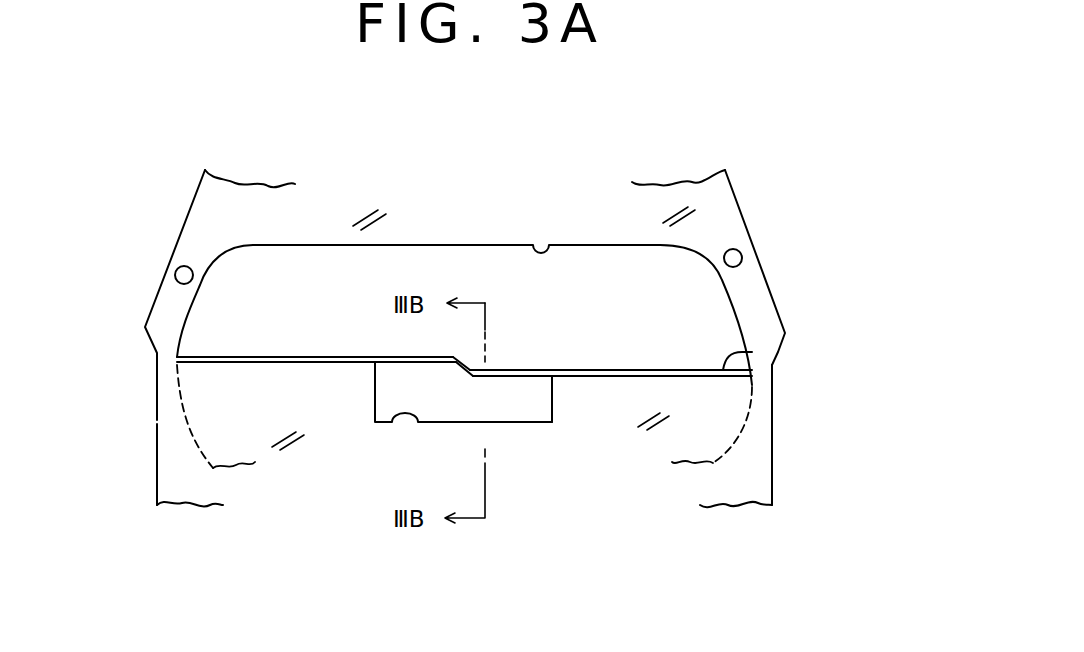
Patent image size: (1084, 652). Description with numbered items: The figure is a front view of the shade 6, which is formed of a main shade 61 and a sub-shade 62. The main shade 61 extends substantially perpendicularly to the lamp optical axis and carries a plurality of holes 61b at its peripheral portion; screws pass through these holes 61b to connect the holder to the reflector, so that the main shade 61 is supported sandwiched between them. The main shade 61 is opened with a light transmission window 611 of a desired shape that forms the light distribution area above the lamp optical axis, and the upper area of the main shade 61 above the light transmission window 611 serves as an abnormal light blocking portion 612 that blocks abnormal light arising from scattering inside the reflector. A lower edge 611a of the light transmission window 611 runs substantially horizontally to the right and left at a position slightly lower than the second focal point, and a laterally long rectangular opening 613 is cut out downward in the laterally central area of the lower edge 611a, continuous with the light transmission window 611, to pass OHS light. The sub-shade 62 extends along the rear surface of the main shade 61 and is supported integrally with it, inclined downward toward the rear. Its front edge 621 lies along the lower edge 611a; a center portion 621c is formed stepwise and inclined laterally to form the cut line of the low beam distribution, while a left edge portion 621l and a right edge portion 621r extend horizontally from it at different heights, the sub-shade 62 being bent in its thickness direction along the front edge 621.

The shade 6 is at (497, 298).
The main shade 61 is at (755, 477).
The holes 61b is at (742, 255).
The light transmission window 611 is at (535, 243).
The lower edge 611a is at (582, 378).
The abnormal light blocking portion 612 is at (277, 207).
The opening 613 is at (392, 422).
The sub-shade 62 is at (737, 438).
The front edge 621 is at (474, 348).
The left edge portion 621l is at (311, 355).
The center portion 621c is at (468, 368).
The right edge portion 621r is at (636, 368).